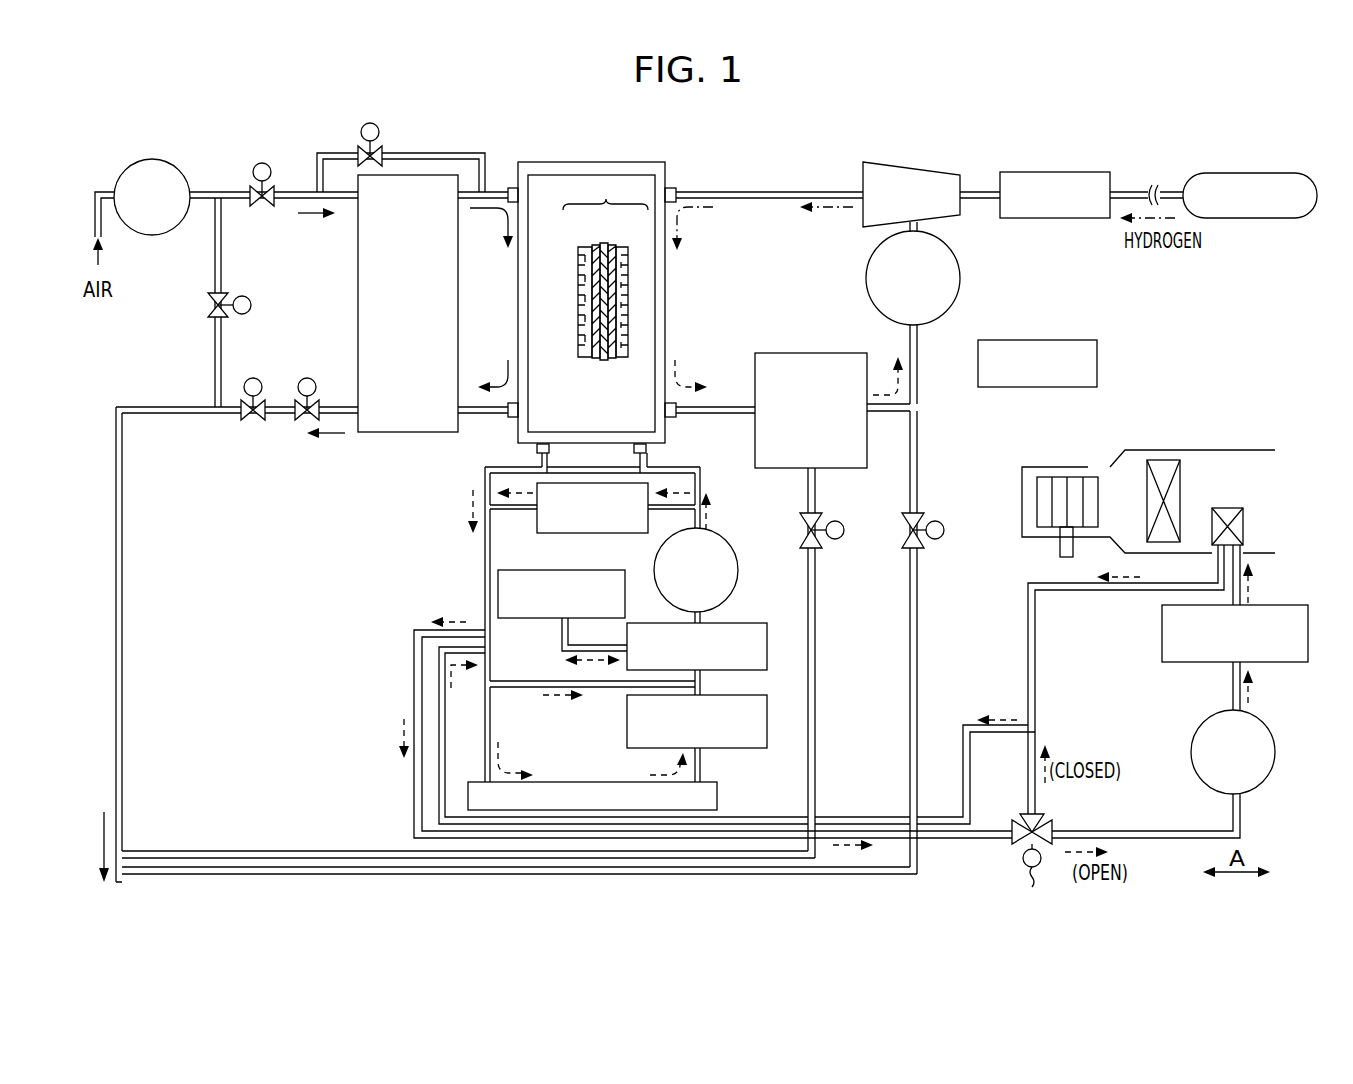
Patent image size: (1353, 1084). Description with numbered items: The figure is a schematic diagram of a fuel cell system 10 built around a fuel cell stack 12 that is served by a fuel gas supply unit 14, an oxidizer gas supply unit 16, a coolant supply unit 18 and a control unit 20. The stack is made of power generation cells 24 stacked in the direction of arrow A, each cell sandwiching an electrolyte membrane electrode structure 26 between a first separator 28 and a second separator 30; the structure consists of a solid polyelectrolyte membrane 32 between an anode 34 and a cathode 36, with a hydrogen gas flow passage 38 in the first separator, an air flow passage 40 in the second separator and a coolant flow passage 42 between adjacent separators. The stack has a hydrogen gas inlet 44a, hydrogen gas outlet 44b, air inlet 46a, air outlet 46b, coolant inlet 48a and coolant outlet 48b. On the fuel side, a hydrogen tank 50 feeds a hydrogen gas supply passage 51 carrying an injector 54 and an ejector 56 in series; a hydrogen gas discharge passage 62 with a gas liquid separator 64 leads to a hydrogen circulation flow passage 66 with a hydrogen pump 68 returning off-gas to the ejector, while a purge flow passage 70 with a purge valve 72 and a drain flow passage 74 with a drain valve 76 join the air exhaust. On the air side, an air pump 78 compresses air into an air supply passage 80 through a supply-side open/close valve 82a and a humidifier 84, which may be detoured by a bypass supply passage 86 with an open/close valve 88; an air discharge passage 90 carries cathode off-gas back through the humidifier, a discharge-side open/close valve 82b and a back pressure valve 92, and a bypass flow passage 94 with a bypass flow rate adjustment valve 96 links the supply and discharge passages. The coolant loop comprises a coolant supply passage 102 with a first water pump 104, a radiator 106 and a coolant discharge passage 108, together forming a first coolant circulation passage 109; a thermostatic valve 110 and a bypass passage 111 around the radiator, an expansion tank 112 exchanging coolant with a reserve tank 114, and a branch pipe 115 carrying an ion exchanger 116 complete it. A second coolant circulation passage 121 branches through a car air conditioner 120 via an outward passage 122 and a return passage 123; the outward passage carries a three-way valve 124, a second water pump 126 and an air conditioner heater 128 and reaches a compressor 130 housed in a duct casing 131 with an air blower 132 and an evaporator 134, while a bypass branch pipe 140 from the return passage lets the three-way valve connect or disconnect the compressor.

The fuel cell system 10 is at (968, 143).
The fuel cell stack 12 is at (605, 149).
The fuel gas supply unit 14 is at (1093, 240).
The oxidizer gas supply unit 16 is at (310, 148).
The coolant supply unit 18 is at (798, 645).
The control unit 20 is at (1040, 339).
The power generation cell 24 is at (572, 178).
The electrolyte membrane electrode structure 26 is at (605, 192).
The first separator 28 is at (629, 266).
The second separator 30 is at (579, 252).
The solid polyelectrolyte membrane 32 is at (604, 243).
The anode 34 is at (615, 243).
The cathode 36 is at (594, 243).
The hydrogen gas flow passage 38 is at (622, 322).
The air flow passage 40 is at (585, 271).
The coolant flow passage 42 is at (580, 338).
The hydrogen gas inlet 44a is at (672, 185).
The hydrogen gas outlet 44b is at (676, 418).
The air inlet 46a is at (512, 185).
The air outlet 46b is at (507, 419).
The coolant inlet 48a is at (634, 448).
The coolant outlet 48b is at (549, 448).
The hydrogen tank 50 is at (1250, 172).
The hydrogen gas supply passage 51 is at (1166, 186).
The injector 54 is at (1053, 171).
The ejector 56 is at (913, 168).
The hydrogen gas discharge passage 62 is at (885, 414).
The gas liquid separator 64 is at (818, 352).
The hydrogen circulation flow passage 66 is at (920, 356).
The hydrogen pump 68 is at (960, 272).
The purge flow passage 70 is at (920, 439).
The purge valve 72 is at (936, 521).
The drain flow passage 74 is at (263, 851).
The drain valve 76 is at (836, 521).
The air pump 78 is at (152, 160).
The air supply passage 80 is at (204, 190).
The supply-side open/close valve 82a is at (260, 163).
The discharge-side open/close valve 82b is at (307, 378).
The humidifier 84 is at (357, 260).
The bypass supply passage 86 is at (441, 152).
The open/close valve 88 is at (360, 130).
The air discharge passage 90 is at (469, 404).
The back pressure valve 92 is at (253, 378).
The bypass flow passage 94 is at (223, 231).
The bypass flow rate adjustment valve 96 is at (242, 296).
The coolant supply passage 102 is at (701, 484).
The first water pump 104 is at (728, 545).
The radiator 106 is at (575, 781).
The coolant discharge passage 108 is at (482, 479).
The first coolant circulation passage 109 is at (799, 691).
The thermostatic valve 110 is at (741, 749).
The bypass passage 111 is at (530, 688).
The expansion tank 112 is at (748, 622).
The reserve tank 114 is at (530, 620).
The branch pipe 115 is at (515, 510).
The ion exchanger 116 is at (565, 534).
The car air conditioner 120 is at (1214, 424).
The second coolant circulation passage 121 is at (986, 851).
The outward passage 122 is at (414, 782).
The return passage 123 is at (447, 705).
The three-way valve 124 is at (1035, 889).
The second water pump 126 is at (1205, 786).
The air conditioner heater 128 is at (1160, 626).
The compressor 130 is at (1246, 520).
The duct casing 131 is at (1263, 449).
The air blower 132 is at (1059, 476).
The evaporator 134 is at (1163, 468).
The bypass branch pipe 140 is at (1027, 761).